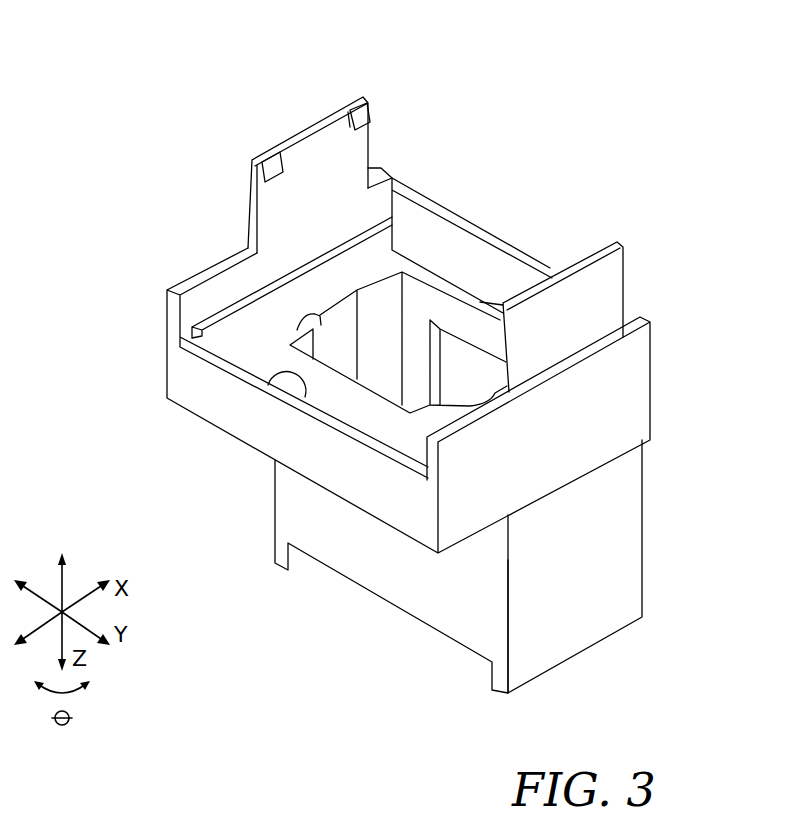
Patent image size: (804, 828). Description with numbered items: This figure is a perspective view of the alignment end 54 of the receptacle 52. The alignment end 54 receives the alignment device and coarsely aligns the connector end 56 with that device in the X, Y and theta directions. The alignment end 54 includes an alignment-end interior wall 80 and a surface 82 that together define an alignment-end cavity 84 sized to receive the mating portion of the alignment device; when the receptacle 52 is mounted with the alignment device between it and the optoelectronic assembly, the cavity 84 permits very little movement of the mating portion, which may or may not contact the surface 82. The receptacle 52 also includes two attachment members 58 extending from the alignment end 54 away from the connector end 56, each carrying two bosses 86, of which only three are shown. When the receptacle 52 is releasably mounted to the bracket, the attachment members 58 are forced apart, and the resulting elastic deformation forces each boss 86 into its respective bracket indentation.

The receptacle 52 is at (662, 597).
The alignment end 54 is at (653, 380).
The connector end 56 is at (400, 608).
The attachment member 58 is at (302, 133).
The alignment-end interior wall 80 is at (446, 250).
The surface 82 is at (272, 355).
The alignment-end cavity 84 is at (289, 302).
The boss 86 is at (373, 107).